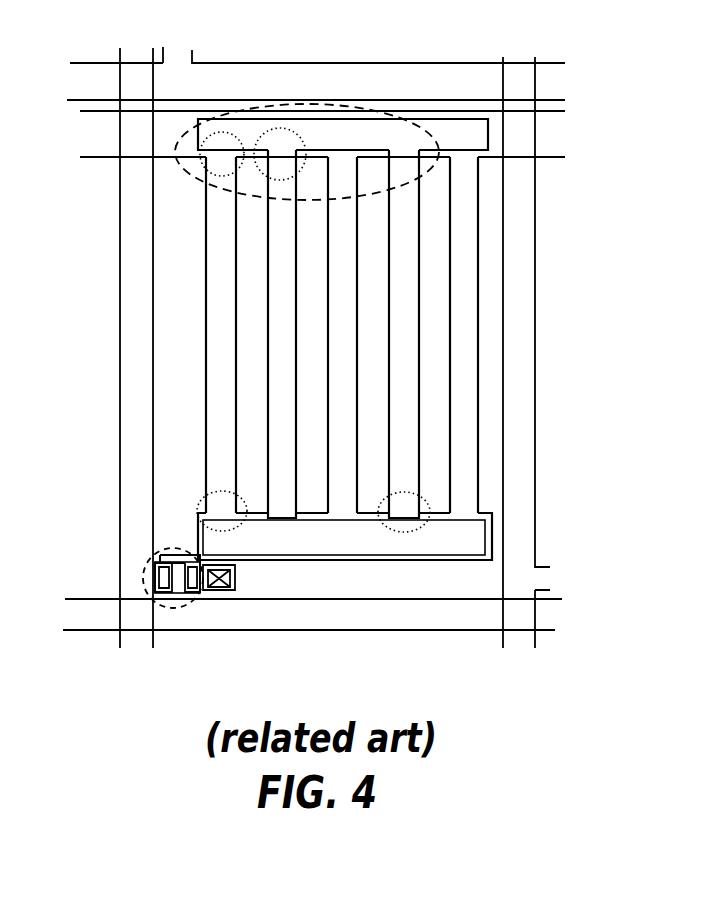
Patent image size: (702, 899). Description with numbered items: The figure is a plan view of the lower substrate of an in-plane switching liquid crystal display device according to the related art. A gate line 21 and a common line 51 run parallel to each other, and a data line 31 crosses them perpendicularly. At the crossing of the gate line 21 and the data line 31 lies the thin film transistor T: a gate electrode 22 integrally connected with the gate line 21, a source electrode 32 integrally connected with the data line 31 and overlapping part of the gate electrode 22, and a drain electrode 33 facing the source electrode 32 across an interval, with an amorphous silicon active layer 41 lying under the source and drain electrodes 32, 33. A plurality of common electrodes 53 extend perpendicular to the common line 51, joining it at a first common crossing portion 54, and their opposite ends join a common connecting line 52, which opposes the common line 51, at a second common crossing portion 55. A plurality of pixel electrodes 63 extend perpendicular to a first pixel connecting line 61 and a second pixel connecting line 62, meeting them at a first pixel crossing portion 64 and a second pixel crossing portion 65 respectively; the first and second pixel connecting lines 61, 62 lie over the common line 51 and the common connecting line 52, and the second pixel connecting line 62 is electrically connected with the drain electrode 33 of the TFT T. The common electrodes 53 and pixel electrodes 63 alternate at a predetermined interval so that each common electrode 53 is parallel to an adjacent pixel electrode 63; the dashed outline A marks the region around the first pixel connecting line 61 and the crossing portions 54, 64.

The gate line 21 is at (258, 63).
The gate electrode 22 is at (175, 555).
The data line 31 is at (120, 224).
The source electrode 32 is at (162, 594).
The drain electrode 33 is at (196, 594).
The active layer 41 is at (176, 595).
The common line 51 is at (400, 111).
The common connecting line 52 is at (430, 561).
The common electrode 53 is at (207, 273).
The first common crossing portion 54 is at (204, 168).
The second common crossing portion 55 is at (203, 506).
The first pixel connecting line 61 is at (455, 119).
The second pixel connecting line 62 is at (363, 556).
The pixel electrode 63 is at (268, 376).
The first pixel crossing portion 64 is at (298, 162).
The second pixel crossing portion 65 is at (388, 506).
The region A is at (439, 142).
The TFT T is at (143, 572).